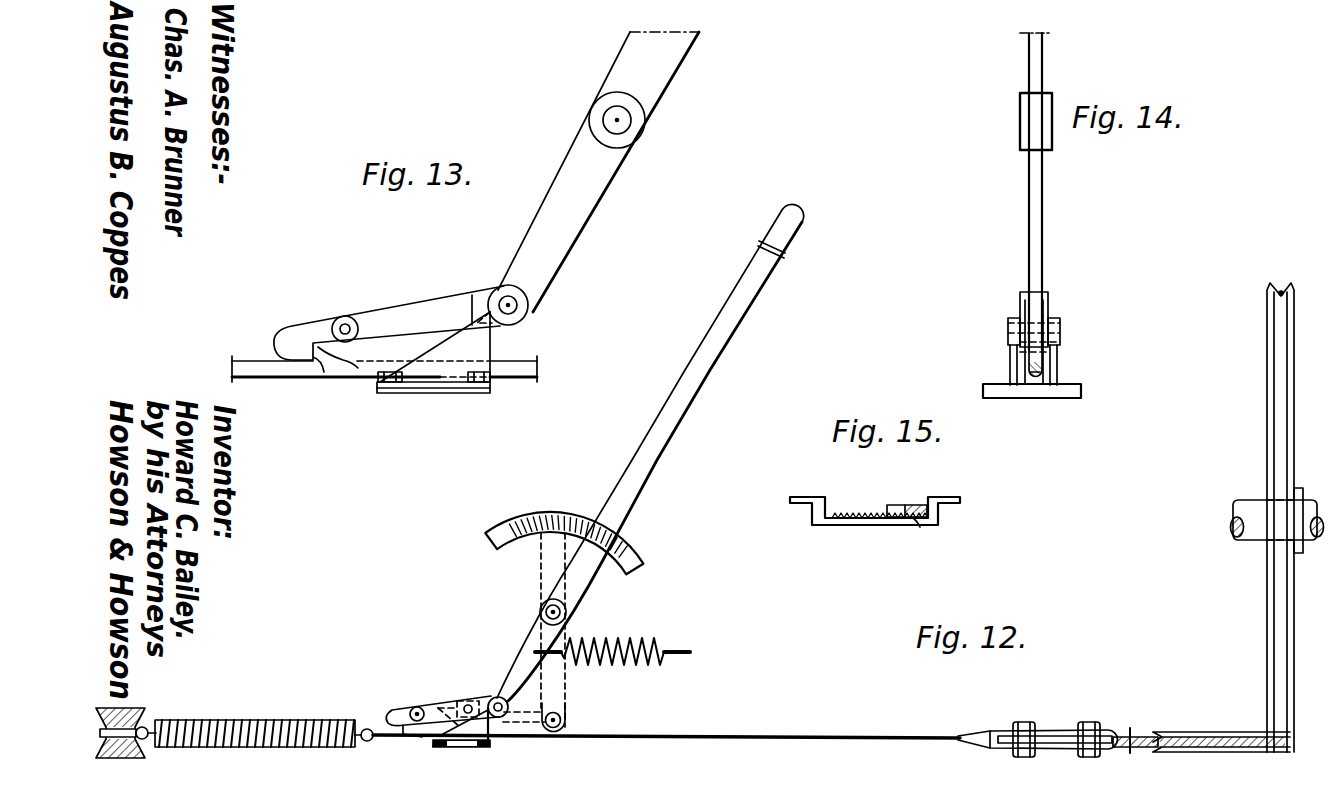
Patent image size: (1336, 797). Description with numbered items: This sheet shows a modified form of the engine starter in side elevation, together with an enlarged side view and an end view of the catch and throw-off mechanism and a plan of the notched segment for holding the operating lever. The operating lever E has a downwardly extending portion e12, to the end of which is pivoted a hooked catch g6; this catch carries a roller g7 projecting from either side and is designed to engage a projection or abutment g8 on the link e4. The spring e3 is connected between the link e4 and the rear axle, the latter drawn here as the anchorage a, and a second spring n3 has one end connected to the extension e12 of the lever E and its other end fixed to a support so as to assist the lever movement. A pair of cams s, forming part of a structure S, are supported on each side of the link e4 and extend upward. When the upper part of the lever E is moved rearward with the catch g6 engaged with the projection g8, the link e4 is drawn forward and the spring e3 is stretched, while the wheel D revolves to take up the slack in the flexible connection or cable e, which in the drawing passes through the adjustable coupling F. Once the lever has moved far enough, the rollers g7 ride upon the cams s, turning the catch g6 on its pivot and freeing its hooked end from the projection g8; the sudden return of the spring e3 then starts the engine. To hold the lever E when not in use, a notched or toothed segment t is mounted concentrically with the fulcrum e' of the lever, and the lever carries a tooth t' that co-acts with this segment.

In FIG. 13, the operating lever E is at (652, 83).
In FIG. 14, the operating lever E is at (1029, 68).
In FIG. 15, the operating lever E is at (895, 503).
In FIG. 12, the operating lever E is at (682, 400).
In FIG. 13, the downwardly extending portion e12 is at (577, 207).
In FIG. 14, the downwardly extending portion e12 is at (1038, 246).
In FIG. 12, the downwardly extending portion e12 is at (512, 663).
In FIG. 13, the link e4 is at (520, 380).
In FIG. 14, the link e4 is at (1038, 371).
In FIG. 12, the link e4 is at (692, 735).
In FIG. 12, the spring e3 is at (288, 723).
In FIG. 12, the fulcrum e' is at (569, 612).
In FIG. 12, the flexible connection or cable e is at (1131, 754).
In FIG. 13, the hooked catch g6 is at (430, 296).
In FIG. 14, the hooked catch g6 is at (1050, 312).
In FIG. 12, the hooked catch g6 is at (433, 707).
In FIG. 13, the roller g7 is at (352, 316).
In FIG. 14, the roller g7 is at (1076, 322).
In FIG. 12, the roller g7 is at (413, 712).
In FIG. 13, the projection or abutment g8 is at (328, 366).
In FIG. 12, the projection or abutment g8 is at (403, 733).
In FIG. 13, the cam s is at (486, 346).
In FIG. 14, the cam s is at (1010, 363).
In FIG. 14, the structure S is at (1032, 398).
In FIG. 15, the notched or toothed segment t is at (875, 527).
In FIG. 12, the notched or toothed segment t is at (564, 527).
In FIG. 15, the tooth t' is at (923, 537).
In FIG. 12, the anchor a is at (147, 711).
In FIG. 12, the spring n3 is at (627, 645).
In FIG. 12, the turnbuckle F is at (1050, 732).
In FIG. 12, the wheel D is at (1268, 350).